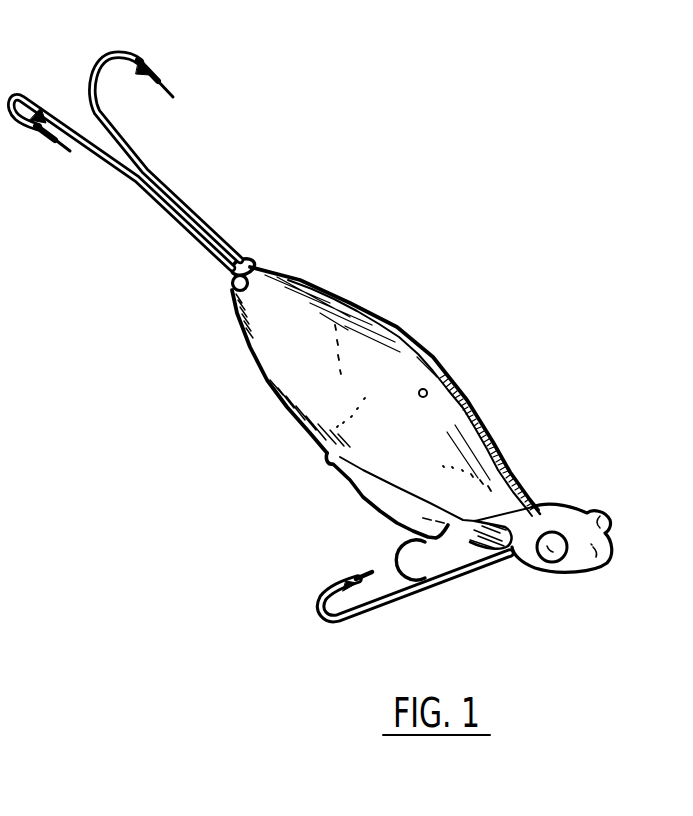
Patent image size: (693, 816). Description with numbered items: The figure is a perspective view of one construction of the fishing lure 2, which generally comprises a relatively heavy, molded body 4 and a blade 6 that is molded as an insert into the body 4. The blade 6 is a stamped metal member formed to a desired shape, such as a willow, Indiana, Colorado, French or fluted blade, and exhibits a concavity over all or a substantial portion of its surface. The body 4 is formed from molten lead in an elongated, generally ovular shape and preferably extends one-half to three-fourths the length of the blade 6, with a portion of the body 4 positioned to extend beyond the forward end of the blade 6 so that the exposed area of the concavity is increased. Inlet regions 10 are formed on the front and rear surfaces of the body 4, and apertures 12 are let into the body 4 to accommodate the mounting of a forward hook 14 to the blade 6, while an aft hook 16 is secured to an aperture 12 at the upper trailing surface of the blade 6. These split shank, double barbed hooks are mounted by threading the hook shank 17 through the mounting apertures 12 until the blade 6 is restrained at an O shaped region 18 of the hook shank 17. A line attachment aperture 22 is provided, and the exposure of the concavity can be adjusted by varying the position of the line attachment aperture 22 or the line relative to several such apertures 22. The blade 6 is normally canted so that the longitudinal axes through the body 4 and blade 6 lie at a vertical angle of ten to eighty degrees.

The lure 2 is at (588, 416).
The body 4 is at (613, 553).
The blade 6 is at (395, 326).
The inlet regions 10 is at (510, 552).
The apertures 12 is at (232, 293).
The forward hook 14 is at (320, 610).
The aft hook 16 is at (173, 190).
The hook shank 17 is at (153, 203).
The O shaped region 18 is at (250, 257).
The line attachment aperture 22 is at (427, 390).